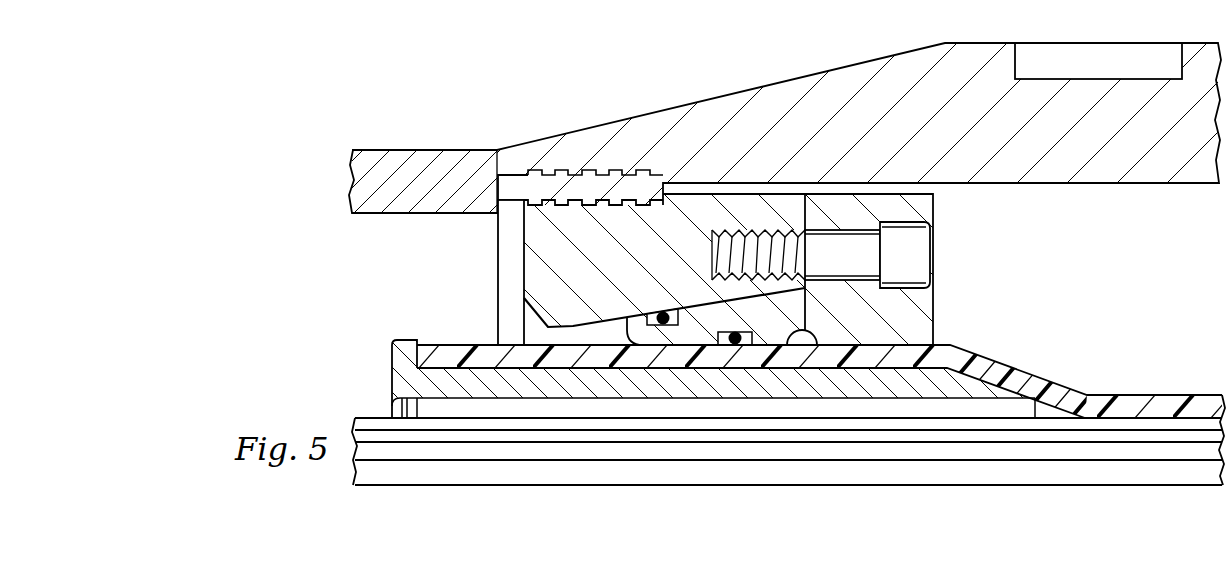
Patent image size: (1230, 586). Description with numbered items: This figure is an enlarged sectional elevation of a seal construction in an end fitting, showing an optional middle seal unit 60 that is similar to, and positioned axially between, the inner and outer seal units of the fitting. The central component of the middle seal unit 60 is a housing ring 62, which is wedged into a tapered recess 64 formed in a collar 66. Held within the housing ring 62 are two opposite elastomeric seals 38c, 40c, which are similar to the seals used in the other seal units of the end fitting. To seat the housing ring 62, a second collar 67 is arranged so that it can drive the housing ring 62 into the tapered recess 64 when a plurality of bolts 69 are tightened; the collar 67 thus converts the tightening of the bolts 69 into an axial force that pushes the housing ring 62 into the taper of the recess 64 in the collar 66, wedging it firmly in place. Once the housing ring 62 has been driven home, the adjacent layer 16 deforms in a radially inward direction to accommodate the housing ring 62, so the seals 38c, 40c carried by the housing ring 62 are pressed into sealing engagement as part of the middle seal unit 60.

The layer 16 is at (1125, 394).
The elastomeric seal 38c is at (717, 340).
The elastomeric seal 40c is at (669, 312).
The middle seal unit 60 is at (782, 354).
The housing ring 62 is at (642, 353).
The tapered recess 64 is at (698, 297).
The collar 66 is at (530, 254).
The collar 67 is at (927, 318).
The bolt 69 is at (917, 248).